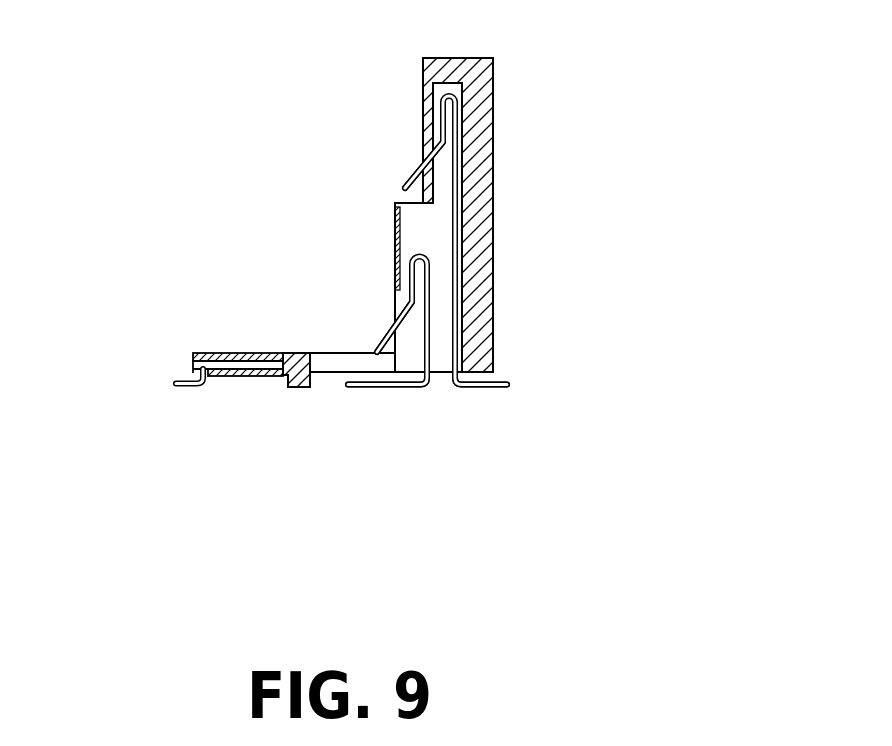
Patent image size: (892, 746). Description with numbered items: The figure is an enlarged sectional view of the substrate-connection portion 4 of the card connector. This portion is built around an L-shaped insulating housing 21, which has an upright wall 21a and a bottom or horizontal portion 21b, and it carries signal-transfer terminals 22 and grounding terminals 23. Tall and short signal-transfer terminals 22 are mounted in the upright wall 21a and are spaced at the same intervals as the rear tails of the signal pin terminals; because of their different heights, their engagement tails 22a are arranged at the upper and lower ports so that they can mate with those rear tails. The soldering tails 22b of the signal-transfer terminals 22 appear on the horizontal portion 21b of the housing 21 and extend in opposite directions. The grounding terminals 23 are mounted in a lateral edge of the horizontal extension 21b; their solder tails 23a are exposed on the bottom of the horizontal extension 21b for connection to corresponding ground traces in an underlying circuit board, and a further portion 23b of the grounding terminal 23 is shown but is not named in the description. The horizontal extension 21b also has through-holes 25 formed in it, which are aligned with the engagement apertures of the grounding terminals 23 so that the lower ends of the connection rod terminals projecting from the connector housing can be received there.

The substrate-connection portion 4 is at (370, 582).
The L-shaped insulating housing 21 is at (493, 243).
The upright wall 21a is at (490, 128).
The horizontal portion 21b is at (296, 352).
The signal-transfer terminal 22 is at (460, 207).
The engagement tail 22a is at (421, 161).
The soldering tail 22b is at (393, 389).
The grounding terminal 23 is at (200, 387).
The solder tail 23a is at (180, 386).
The board lower surface 23b is at (252, 379).
The through-hole 25 is at (242, 352).